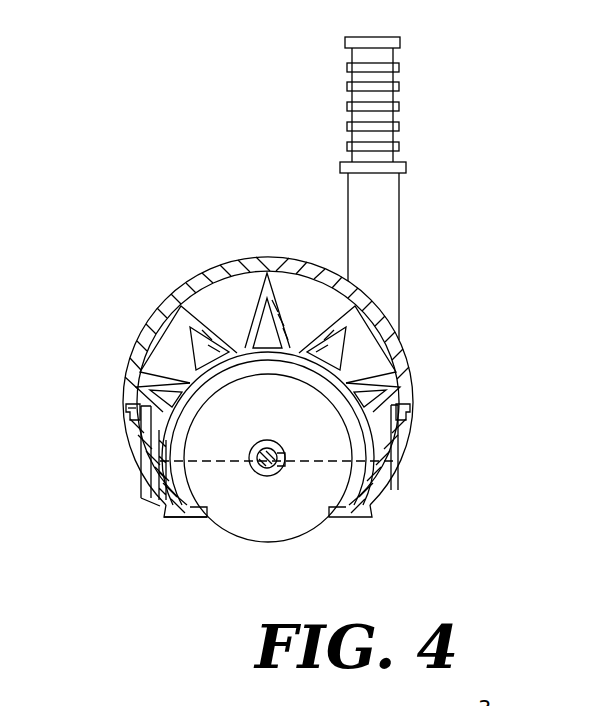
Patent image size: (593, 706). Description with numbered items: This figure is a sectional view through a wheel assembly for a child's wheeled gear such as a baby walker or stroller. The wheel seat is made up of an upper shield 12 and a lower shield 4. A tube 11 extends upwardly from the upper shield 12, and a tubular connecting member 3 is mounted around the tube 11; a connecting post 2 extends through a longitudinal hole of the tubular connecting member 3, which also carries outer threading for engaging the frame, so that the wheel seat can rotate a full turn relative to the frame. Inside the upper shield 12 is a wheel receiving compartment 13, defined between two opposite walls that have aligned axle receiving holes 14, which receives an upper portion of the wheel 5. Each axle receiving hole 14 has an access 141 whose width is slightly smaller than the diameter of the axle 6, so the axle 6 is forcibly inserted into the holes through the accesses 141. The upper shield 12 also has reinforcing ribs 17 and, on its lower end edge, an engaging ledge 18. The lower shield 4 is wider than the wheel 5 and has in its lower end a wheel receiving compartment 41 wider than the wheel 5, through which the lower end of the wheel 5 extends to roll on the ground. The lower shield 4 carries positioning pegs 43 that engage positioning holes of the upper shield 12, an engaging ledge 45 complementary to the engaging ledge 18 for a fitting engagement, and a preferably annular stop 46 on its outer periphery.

The connecting post 2 is at (385, 40).
The tubular connecting member 3 is at (390, 118).
The tube 11 is at (397, 244).
The upper shield 12 is at (196, 276).
The reinforcing ribs 17 is at (340, 350).
The wheel receiving compartment 13 is at (343, 402).
The wheel 5 is at (280, 530).
The axle receiving hole 14 is at (283, 455).
The axle 6 is at (283, 463).
The access 141 is at (287, 460).
The lower shield 4 is at (380, 470).
The engaging ledge 18 is at (126, 406).
The engaging ledge 45 is at (127, 413).
The stop 46 is at (145, 491).
The positioning pegs 43 is at (175, 487).
The wheel receiving compartment 41 is at (207, 515).